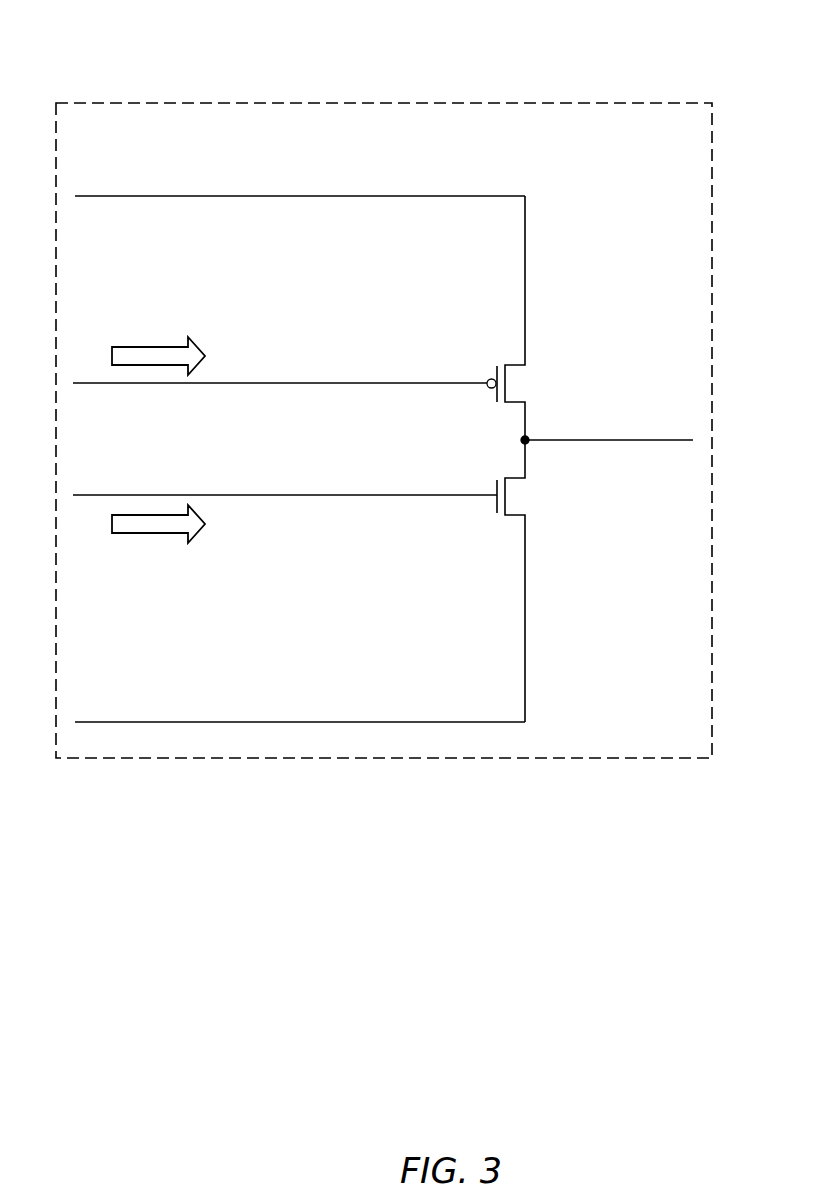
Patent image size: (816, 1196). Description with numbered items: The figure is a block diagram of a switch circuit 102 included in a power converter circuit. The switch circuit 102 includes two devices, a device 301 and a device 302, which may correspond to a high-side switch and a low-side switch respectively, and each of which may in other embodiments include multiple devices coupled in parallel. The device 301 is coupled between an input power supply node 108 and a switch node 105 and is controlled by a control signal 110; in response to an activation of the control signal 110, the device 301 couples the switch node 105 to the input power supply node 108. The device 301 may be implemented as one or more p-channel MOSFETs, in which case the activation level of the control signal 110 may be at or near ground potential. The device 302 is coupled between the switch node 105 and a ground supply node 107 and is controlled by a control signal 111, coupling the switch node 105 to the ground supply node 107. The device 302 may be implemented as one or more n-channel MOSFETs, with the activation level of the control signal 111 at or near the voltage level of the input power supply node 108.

The switch circuit 102 is at (476, 102).
The input power supply node 108 is at (300, 170).
The control signal 110 is at (159, 347).
The device 301 is at (527, 383).
The device 302 is at (527, 495).
The switch node 105 is at (607, 428).
The control signal 111 is at (157, 534).
The ground supply node 107 is at (300, 707).